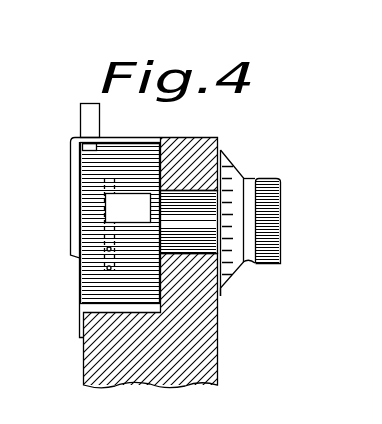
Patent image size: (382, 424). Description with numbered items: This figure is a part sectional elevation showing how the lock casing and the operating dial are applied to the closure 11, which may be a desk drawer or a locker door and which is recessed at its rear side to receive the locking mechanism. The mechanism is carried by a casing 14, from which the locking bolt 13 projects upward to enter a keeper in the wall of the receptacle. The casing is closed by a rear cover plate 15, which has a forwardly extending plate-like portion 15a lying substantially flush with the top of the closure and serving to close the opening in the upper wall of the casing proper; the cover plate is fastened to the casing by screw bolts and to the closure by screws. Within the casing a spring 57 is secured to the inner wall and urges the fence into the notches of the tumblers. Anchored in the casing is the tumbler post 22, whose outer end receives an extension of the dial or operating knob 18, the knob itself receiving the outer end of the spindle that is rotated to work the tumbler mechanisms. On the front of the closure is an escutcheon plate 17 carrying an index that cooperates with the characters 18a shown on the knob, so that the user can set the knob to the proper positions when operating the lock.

The closure 11 is at (100, 352).
The locking bolt 13 is at (80, 118).
The casing 14 is at (78, 294).
The rear cover plate 15 is at (79, 268).
The forwardly extending plate-like portion 15a is at (134, 137).
The escutcheon plate 17 is at (220, 296).
The dial or operating knob 18 is at (274, 265).
The characters 18a is at (248, 178).
The tumbler post 22 is at (175, 225).
The spring 57 is at (108, 203).